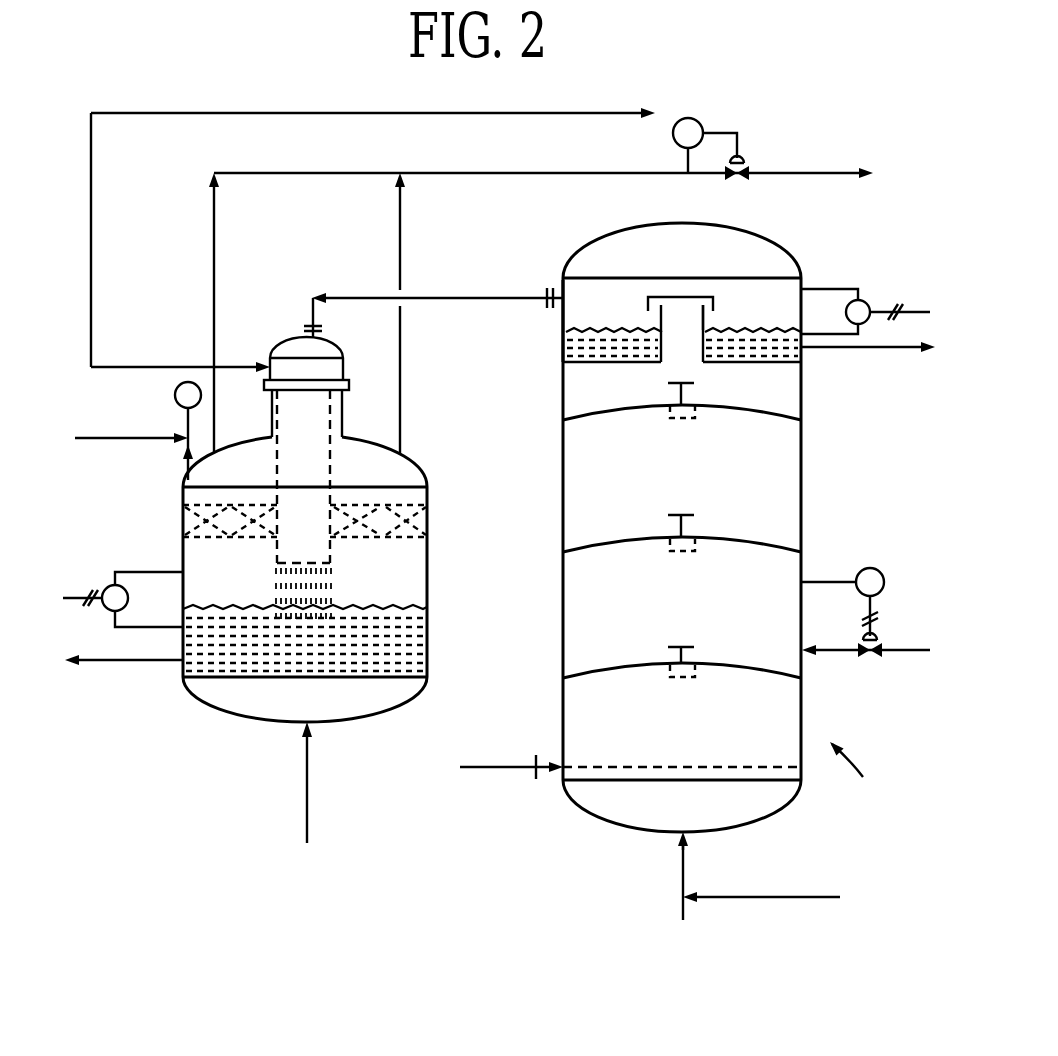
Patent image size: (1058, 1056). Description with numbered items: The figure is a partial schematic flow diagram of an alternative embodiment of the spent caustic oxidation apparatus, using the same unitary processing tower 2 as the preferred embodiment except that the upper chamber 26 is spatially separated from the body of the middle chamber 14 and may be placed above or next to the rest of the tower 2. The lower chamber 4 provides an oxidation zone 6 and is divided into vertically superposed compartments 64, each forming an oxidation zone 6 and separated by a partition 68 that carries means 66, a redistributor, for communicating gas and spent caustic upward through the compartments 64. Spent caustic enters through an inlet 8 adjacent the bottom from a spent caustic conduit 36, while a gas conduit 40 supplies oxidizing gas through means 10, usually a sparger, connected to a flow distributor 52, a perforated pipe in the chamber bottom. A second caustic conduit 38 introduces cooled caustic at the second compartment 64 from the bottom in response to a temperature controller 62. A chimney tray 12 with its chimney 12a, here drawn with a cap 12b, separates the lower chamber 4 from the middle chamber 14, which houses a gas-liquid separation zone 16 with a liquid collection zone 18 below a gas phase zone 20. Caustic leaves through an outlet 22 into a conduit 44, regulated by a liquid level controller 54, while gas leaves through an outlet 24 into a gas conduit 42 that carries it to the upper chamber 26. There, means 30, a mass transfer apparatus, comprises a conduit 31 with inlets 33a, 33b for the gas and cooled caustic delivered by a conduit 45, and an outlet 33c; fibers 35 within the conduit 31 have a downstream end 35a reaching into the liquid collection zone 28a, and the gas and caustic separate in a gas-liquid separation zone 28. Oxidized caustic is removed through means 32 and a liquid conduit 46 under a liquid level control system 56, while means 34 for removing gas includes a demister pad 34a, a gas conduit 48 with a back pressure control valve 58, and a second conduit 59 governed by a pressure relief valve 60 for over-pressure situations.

The unitary processing tower 2 is at (856, 767).
The lower chamber 4 is at (803, 499).
The oxidation zone 6 is at (754, 393).
The inlet 8 is at (677, 836).
The means for introducing gas 10 is at (535, 780).
The chimney tray 12 is at (683, 330).
The chimney 12a is at (705, 329).
The downcomer cap 12b is at (714, 300).
The middle chamber 14 is at (563, 318).
The gas-liquid separation zone 16 is at (598, 305).
The liquid collection zone 18 is at (607, 342).
The gas phase zone 20 is at (785, 287).
The outlet 22 is at (803, 350).
The outlet 24 is at (547, 285).
The upper chamber 26 is at (460, 563).
The gas-liquid separation zone 28 is at (404, 593).
The liquid collection zone 28a is at (395, 642).
The means for introducing the cooled oxidized caustic and gas 30 is at (320, 368).
The conduit 31 is at (331, 425).
The means for removing the oxidized caustic 32 is at (181, 662).
The inlet 33a is at (316, 337).
The inlet 33b is at (266, 362).
The outlet 33c is at (333, 568).
The means for removing the gas 34 is at (214, 450).
The demister pad 34a is at (418, 523).
The fibers 35 is at (275, 600).
The downstream end of the fibers 35a is at (278, 616).
The spent caustic conduit 36 is at (685, 877).
The second caustic conduit 38 is at (827, 653).
The gas conduit 40 is at (485, 768).
The gas conduit 42 is at (437, 300).
The conduit 44 is at (858, 350).
The conduit 45 is at (93, 235).
The liquid conduit 46 is at (127, 662).
The gas conduit 48 is at (216, 235).
The flow distributor 52 is at (592, 766).
The liquid level controller 54 is at (866, 302).
The liquid level control system 56 is at (113, 586).
The back pressure control valve 58 is at (728, 131).
The second conduit 59 is at (186, 458).
The pressure relief valve 60 is at (175, 395).
The temperature controller 62 is at (878, 568).
The compartments 64 is at (803, 392).
The means for communicating the gas and spent caustic 66 is at (677, 399).
The partition 68 is at (593, 415).